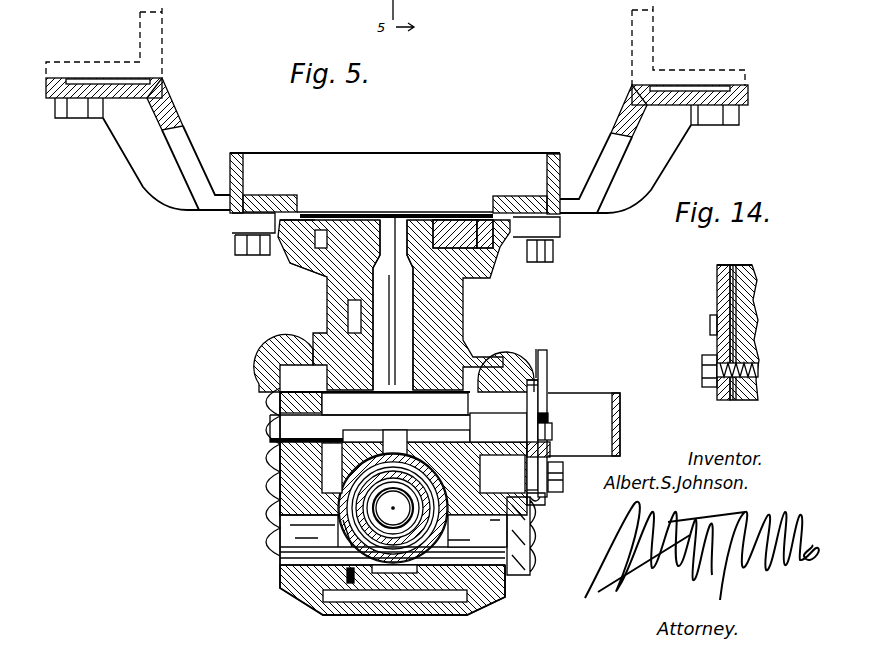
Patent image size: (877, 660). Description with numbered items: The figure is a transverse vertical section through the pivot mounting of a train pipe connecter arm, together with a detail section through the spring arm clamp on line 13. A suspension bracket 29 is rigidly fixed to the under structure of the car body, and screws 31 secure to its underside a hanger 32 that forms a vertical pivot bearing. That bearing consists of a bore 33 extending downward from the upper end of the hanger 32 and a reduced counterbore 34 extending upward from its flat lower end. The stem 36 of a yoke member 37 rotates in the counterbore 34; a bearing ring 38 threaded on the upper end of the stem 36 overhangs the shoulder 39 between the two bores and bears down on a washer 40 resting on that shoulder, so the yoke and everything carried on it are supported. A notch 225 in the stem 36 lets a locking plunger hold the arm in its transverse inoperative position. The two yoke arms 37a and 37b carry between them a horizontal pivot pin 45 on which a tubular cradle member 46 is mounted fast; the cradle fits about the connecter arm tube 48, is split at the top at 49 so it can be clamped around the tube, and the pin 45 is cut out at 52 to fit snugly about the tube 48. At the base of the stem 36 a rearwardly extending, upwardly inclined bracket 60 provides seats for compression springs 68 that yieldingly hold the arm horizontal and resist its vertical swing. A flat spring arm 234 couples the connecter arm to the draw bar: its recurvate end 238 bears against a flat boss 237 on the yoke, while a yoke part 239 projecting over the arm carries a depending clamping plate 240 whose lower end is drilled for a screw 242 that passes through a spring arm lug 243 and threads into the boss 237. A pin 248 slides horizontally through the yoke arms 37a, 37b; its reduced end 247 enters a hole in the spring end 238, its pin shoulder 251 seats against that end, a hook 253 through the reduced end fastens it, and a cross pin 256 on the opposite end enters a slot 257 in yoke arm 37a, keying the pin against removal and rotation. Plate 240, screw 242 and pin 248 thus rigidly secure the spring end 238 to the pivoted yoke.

In FIG. 5, the suspension bracket 29 is at (178, 137).
In FIG. 5, the screws 31 is at (236, 252).
In FIG. 5, the hanger 32 is at (477, 308).
In FIG. 5, the bore 33 is at (305, 213).
In FIG. 5, the reduced counterbore 34 is at (369, 213).
In FIG. 5, the stem 36 is at (350, 291).
In FIG. 5, the yoke member 37 is at (483, 390).
In FIG. 5, the yoke arm 37a is at (300, 498).
In FIG. 5, the yoke arm 37b is at (488, 582).
In FIG. 5, the bearing ring 38 is at (460, 212).
In FIG. 5, the shoulder 39 is at (290, 265).
In FIG. 5, the washer 40 is at (480, 212).
In FIG. 5, the horizontal pivot pin 45 is at (290, 533).
In FIG. 5, the cradle member 46 is at (326, 486).
In FIG. 5, the connecter arm tube 48 is at (353, 530).
In FIG. 5, the longitudinal split 49 is at (398, 450).
In FIG. 5, the cut-out 52 is at (443, 528).
In FIG. 5, the bracket 60 is at (282, 357).
In FIG. 5, the compression springs 68 is at (273, 507).
In FIG. 5, the bolt 13 is at (529, 350).
In FIG. 5, the notch 225 is at (352, 318).
In FIG. 5, the spring arm 234 is at (612, 420).
In FIG. 5, the boss 237 is at (535, 393).
In FIG. 14, the boss 237 is at (747, 303).
In FIG. 5, the recurvate end 238 is at (534, 453).
In FIG. 14, the recurvate end 238 is at (735, 330).
In FIG. 5, the yoke part 239 is at (512, 380).
In FIG. 14, the yoke part 239 is at (731, 266).
In FIG. 5, the clamping plate 240 is at (562, 393).
In FIG. 14, the clamping plate 240 is at (717, 293).
In FIG. 5, the screw 242 is at (562, 474).
In FIG. 14, the screw 242 is at (720, 368).
In FIG. 5, the spring arm lug 243 is at (535, 503).
In FIG. 5, the reduced end 247 is at (553, 432).
In FIG. 14, the reduced end 247 is at (710, 323).
In FIG. 5, the pin 248 is at (498, 427).
In FIG. 5, the pin shoulder 251 is at (502, 474).
In FIG. 5, the hook 253 is at (546, 416).
In FIG. 5, the cross pin 256 is at (277, 423).
In FIG. 5, the slot 257 is at (280, 437).